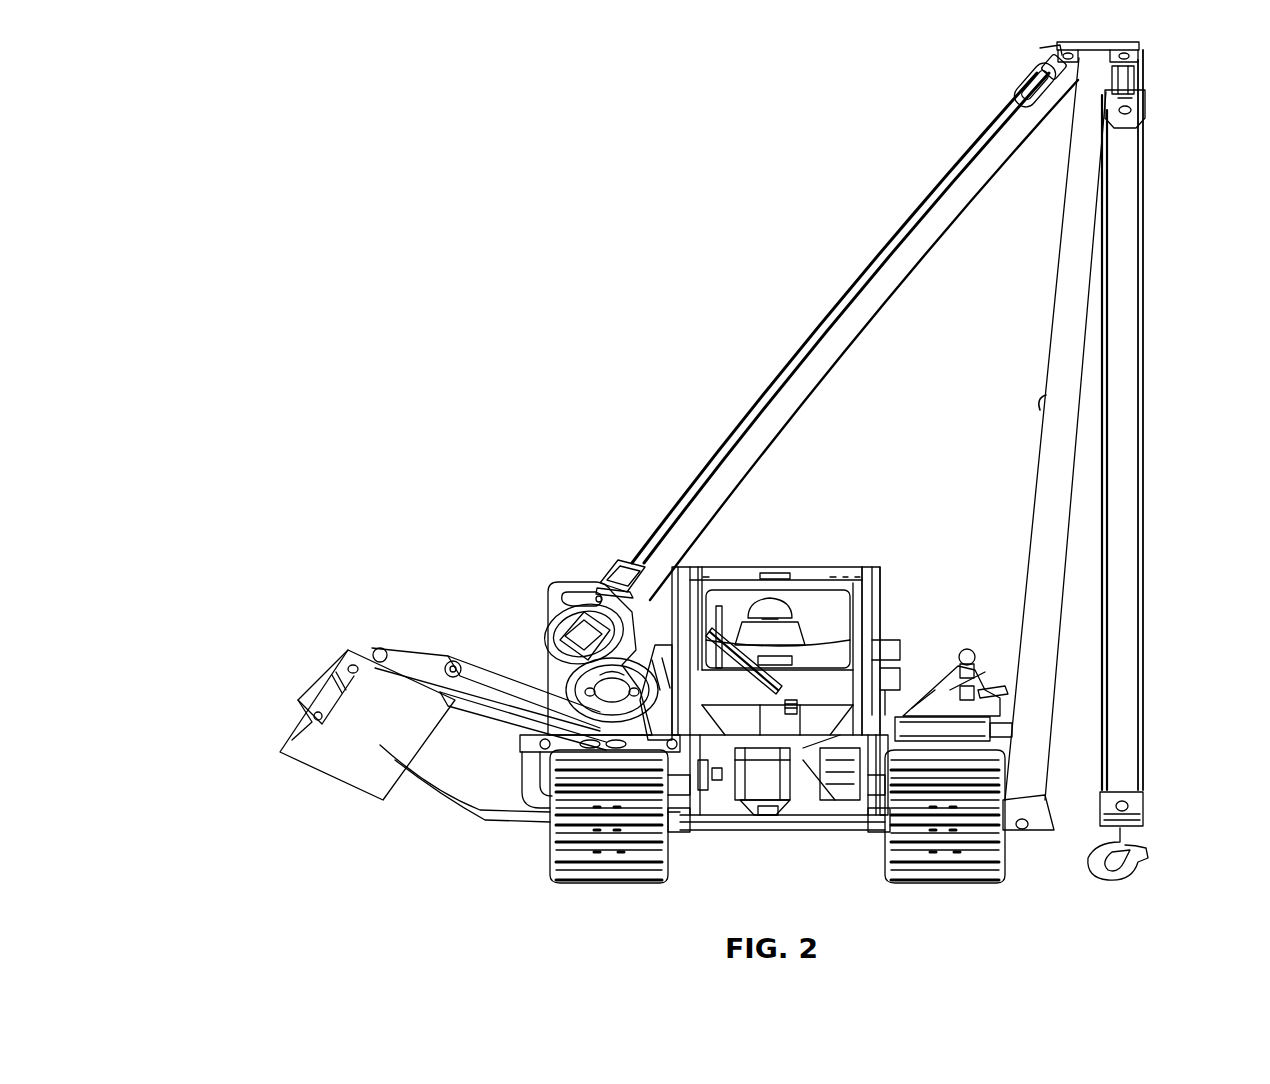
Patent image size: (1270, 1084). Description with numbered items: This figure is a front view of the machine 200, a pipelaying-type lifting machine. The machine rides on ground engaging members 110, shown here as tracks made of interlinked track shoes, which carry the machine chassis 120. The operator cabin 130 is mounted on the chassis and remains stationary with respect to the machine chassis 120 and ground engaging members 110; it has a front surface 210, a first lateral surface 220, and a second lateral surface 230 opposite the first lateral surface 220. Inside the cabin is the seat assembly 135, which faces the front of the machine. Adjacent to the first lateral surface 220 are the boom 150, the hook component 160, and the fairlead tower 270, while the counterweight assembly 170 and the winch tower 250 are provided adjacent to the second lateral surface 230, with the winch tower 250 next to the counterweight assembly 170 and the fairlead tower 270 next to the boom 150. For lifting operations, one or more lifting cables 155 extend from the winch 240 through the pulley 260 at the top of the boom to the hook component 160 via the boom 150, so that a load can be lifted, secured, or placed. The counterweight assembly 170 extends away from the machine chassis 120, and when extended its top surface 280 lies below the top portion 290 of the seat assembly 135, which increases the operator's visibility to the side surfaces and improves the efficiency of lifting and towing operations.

The pipelayer machine 200 is at (282, 68).
The ground engaging members 110 is at (612, 872).
The machine chassis 120 is at (720, 835).
The operator cabin 130 is at (840, 548).
The seat assembly 135 is at (775, 600).
The boom 150 is at (1055, 302).
The lifting cables 155 is at (838, 306).
The hook component 160 is at (1146, 810).
The counterweight assembly 170 is at (392, 800).
The front surface 210 is at (782, 668).
The first lateral surface 220 is at (873, 600).
The second lateral surface 230 is at (714, 566).
The winch 240 is at (544, 634).
The winch tower 250 is at (556, 570).
The pulley 260 is at (1146, 80).
The fairlead tower 270 is at (934, 668).
The top surface of counterweight assembly 280 is at (350, 648).
The top portion of seat assembly 290 is at (744, 600).